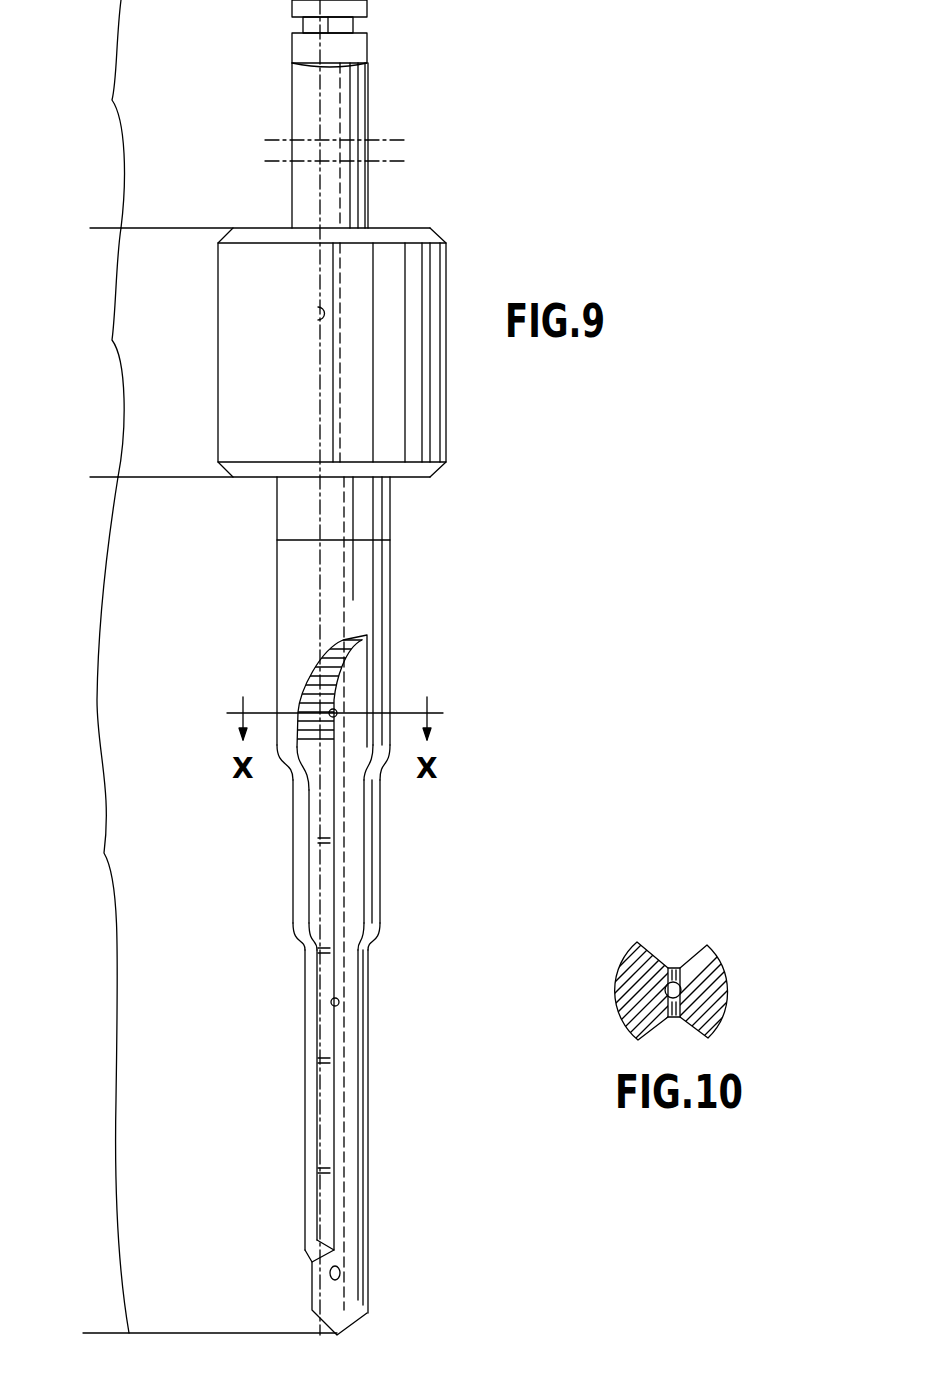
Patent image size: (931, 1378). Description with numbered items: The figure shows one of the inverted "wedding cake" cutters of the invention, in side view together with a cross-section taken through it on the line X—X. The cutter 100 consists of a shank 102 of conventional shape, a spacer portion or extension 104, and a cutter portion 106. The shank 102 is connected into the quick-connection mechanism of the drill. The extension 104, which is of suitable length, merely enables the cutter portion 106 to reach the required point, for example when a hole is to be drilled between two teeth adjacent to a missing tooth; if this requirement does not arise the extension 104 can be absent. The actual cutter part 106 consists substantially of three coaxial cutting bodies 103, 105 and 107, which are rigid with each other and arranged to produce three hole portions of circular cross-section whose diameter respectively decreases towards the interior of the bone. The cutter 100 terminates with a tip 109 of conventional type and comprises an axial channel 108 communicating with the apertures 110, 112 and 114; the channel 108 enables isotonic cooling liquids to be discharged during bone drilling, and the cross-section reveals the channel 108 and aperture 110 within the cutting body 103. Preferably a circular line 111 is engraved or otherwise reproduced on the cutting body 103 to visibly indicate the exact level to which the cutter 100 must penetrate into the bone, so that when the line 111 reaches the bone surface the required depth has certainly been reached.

In FIG. 9, the cutter 100 is at (437, 540).
In FIG. 10, the cutter 100 is at (733, 975).
In FIG. 9, the shank 102 is at (246, 114).
In FIG. 9, the cutting body 103 is at (277, 625).
In FIG. 10, the cutting body 103 is at (615, 977).
In FIG. 9, the spacer portion or extension 104 is at (254, 352).
In FIG. 9, the cutting body 105 is at (293, 847).
In FIG. 9, the cutter portion 106 is at (192, 905).
In FIG. 9, the cutting body 107 is at (370, 1135).
In FIG. 9, the axial channel 108 is at (318, 323).
In FIG. 10, the axial channel 108 is at (681, 995).
In FIG. 9, the tip 109 is at (366, 1300).
In FIG. 9, the aperture 110 is at (337, 710).
In FIG. 10, the aperture 110 is at (673, 970).
In FIG. 9, the circular line 111 is at (283, 540).
In FIG. 9, the aperture 112 is at (339, 999).
In FIG. 9, the aperture 114 is at (341, 1262).